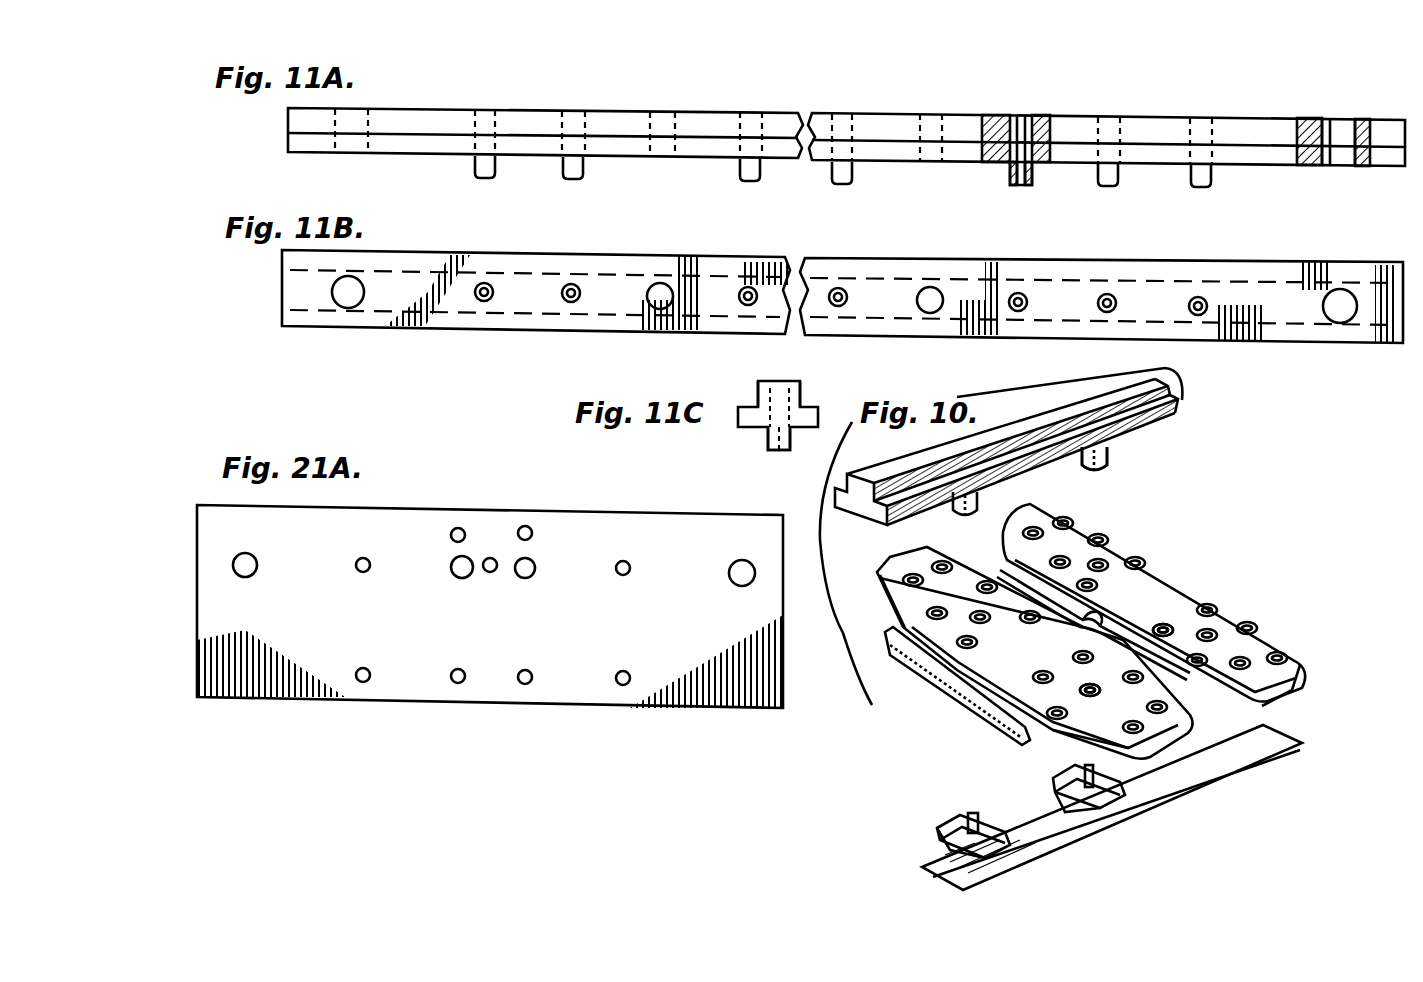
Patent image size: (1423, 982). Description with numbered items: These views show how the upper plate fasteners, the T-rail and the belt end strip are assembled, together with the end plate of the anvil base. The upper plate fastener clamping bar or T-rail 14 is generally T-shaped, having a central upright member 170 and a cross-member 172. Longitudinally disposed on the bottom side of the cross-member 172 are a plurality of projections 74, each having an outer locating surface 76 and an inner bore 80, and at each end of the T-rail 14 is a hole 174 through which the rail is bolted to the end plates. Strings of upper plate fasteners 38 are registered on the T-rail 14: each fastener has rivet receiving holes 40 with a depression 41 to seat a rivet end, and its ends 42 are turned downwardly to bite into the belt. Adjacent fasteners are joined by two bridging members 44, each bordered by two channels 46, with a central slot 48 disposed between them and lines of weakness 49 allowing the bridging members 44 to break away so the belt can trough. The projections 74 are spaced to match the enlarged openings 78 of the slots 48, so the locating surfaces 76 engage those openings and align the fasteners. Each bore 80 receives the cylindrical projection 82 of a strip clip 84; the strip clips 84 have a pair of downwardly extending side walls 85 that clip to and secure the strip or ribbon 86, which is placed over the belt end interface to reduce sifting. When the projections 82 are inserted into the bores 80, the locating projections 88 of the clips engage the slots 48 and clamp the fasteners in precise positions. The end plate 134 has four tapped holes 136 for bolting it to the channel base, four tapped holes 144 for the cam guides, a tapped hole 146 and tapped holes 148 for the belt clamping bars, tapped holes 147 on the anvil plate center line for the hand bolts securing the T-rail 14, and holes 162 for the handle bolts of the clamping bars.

In FIG. 11A, the upper plate fastener clamping bar or T-rail 14 is at (430, 160).
In FIG. 11B, the upper plate fastener clamping bar or T-rail 14 is at (430, 340).
In FIG. 11C, the upper plate fastener clamping bar or T-rail 14 is at (748, 432).
In FIG. 10, the upper plate fastener clamping bar or T-rail 14 is at (935, 460).
In FIG. 11A, the hole 174 is at (355, 118).
In FIG. 11B, the hole 174 is at (348, 300).
In FIG. 11A, the locating surface 76 is at (562, 160).
In FIG. 11B, the locating surface 76 is at (571, 302).
In FIG. 10, the locating surface 76 is at (1108, 458).
In FIG. 11A, the bore 80 is at (1015, 184).
In FIG. 11B, the bore 80 is at (571, 284).
In FIG. 11C, the cross-member 172 is at (742, 410).
In FIG. 11C, the central upright member 170 is at (797, 383).
In FIG. 11C, the projection 74 is at (780, 448).
In FIG. 10, the projection 74 is at (958, 516).
In FIG. 21A, the end plate 134 is at (435, 470).
In FIG. 21A, the hole 162 is at (262, 537).
In FIG. 21A, the tapped hole 136 is at (378, 538).
In FIG. 21A, the tapped hole 144 is at (525, 526).
In FIG. 21A, the tapped hole 148 is at (462, 578).
In FIG. 21A, the tapped hole 147 is at (510, 538).
In FIG. 21A, the tapped hole 146 is at (535, 572).
In FIG. 10, the upper plate fastener 38 is at (1022, 505).
In FIG. 10, the end 42 is at (900, 572).
In FIG. 10, the depression 41 is at (1280, 690).
In FIG. 10, the channel 46 is at (1040, 600).
In FIG. 10, the central slot 48 is at (1088, 628).
In FIG. 10, the bridging member 44 is at (1070, 590).
In FIG. 10, the line of weakness 49 is at (1130, 625).
In FIG. 10, the rivet receiving hole 40 is at (1130, 722).
In FIG. 10, the enlarged opening 78 is at (935, 705).
In FIG. 10, the strip or ribbon 86 is at (1250, 745).
In FIG. 10, the strip clip 84 is at (1040, 770).
In FIG. 10, the projection 82 is at (973, 812).
In FIG. 10, the locating projection 88 is at (942, 848).
In FIG. 10, the side wall 85 is at (1070, 810).